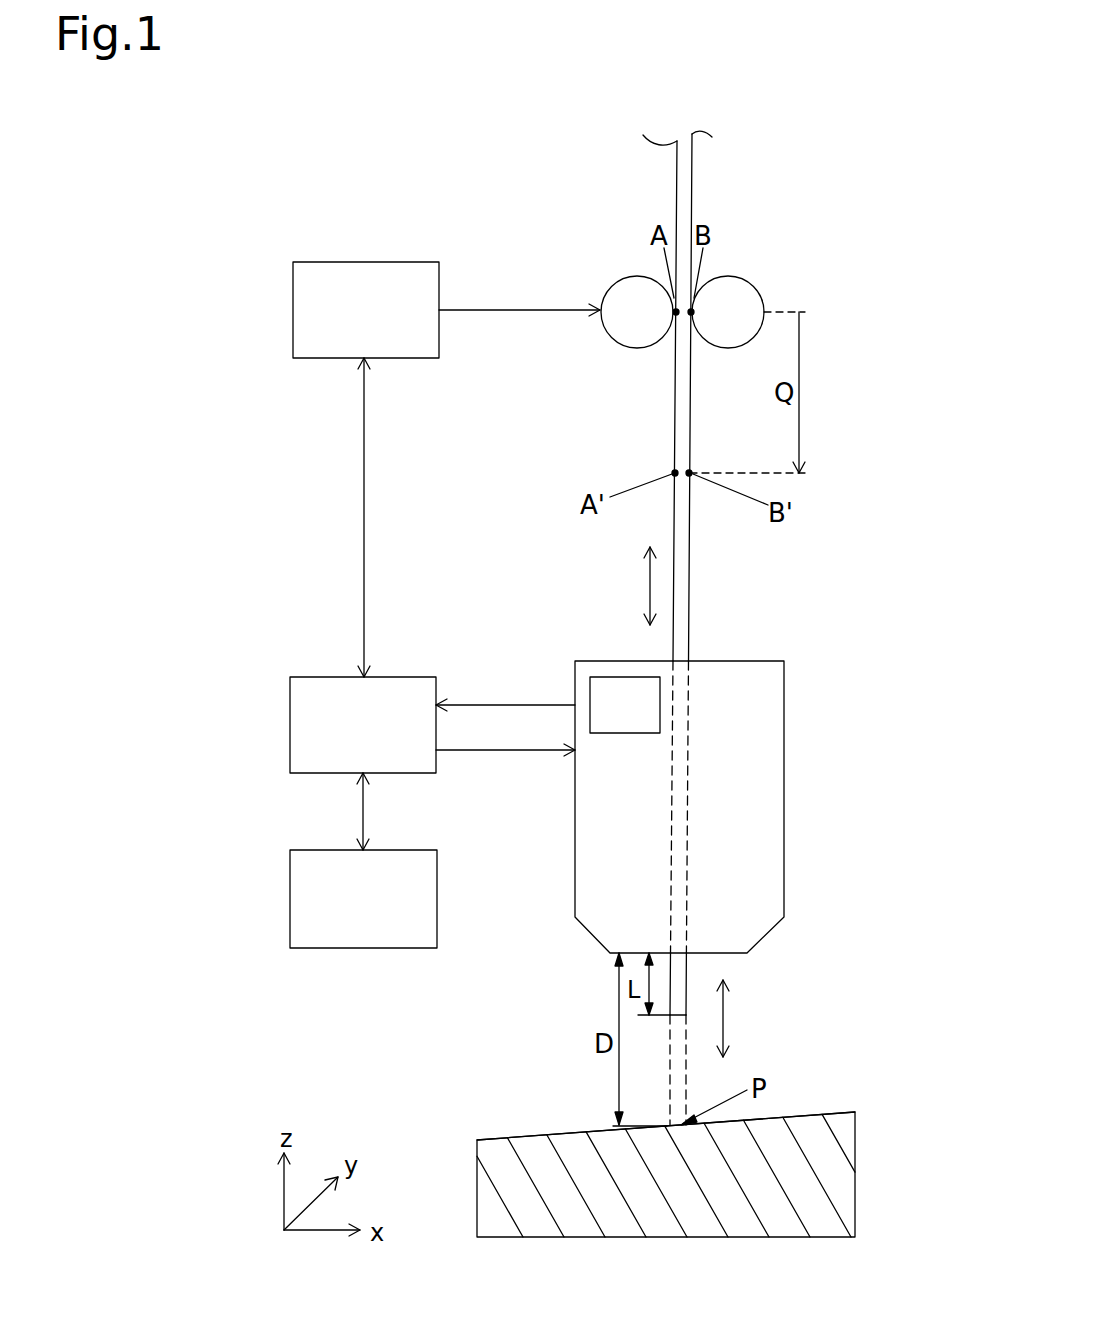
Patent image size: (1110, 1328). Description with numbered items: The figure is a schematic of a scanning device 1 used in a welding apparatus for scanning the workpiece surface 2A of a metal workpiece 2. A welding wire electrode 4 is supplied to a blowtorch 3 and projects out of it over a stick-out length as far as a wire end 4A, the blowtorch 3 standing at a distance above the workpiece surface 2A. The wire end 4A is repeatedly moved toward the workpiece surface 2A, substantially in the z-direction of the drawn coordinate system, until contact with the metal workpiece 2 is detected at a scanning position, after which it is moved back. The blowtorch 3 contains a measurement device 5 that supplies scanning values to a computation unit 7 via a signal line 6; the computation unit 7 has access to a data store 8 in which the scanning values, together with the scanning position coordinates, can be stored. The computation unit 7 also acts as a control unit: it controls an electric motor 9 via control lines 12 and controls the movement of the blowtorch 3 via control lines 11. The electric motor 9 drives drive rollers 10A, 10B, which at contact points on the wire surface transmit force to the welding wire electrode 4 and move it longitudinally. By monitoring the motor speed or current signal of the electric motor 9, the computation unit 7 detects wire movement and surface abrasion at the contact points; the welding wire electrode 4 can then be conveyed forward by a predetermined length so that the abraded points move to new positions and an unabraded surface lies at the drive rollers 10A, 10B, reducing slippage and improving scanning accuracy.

The scanning device 1 is at (214, 475).
The metal workpiece 2 is at (630, 1147).
The workpiece surface 2A is at (538, 1137).
The blowtorch 3 is at (717, 807).
The welding wire electrode 4 is at (716, 628).
The wire end 4A is at (675, 1015).
The measurement device 5 is at (625, 705).
The signal line 6 is at (538, 703).
The computation unit 7 is at (363, 725).
The data store 8 is at (363, 899).
The electric motor 9 is at (366, 310).
The drive roller 10A is at (637, 312).
The drive roller 10B is at (728, 312).
The control lines 11 is at (537, 753).
The control lines 12 is at (364, 517).